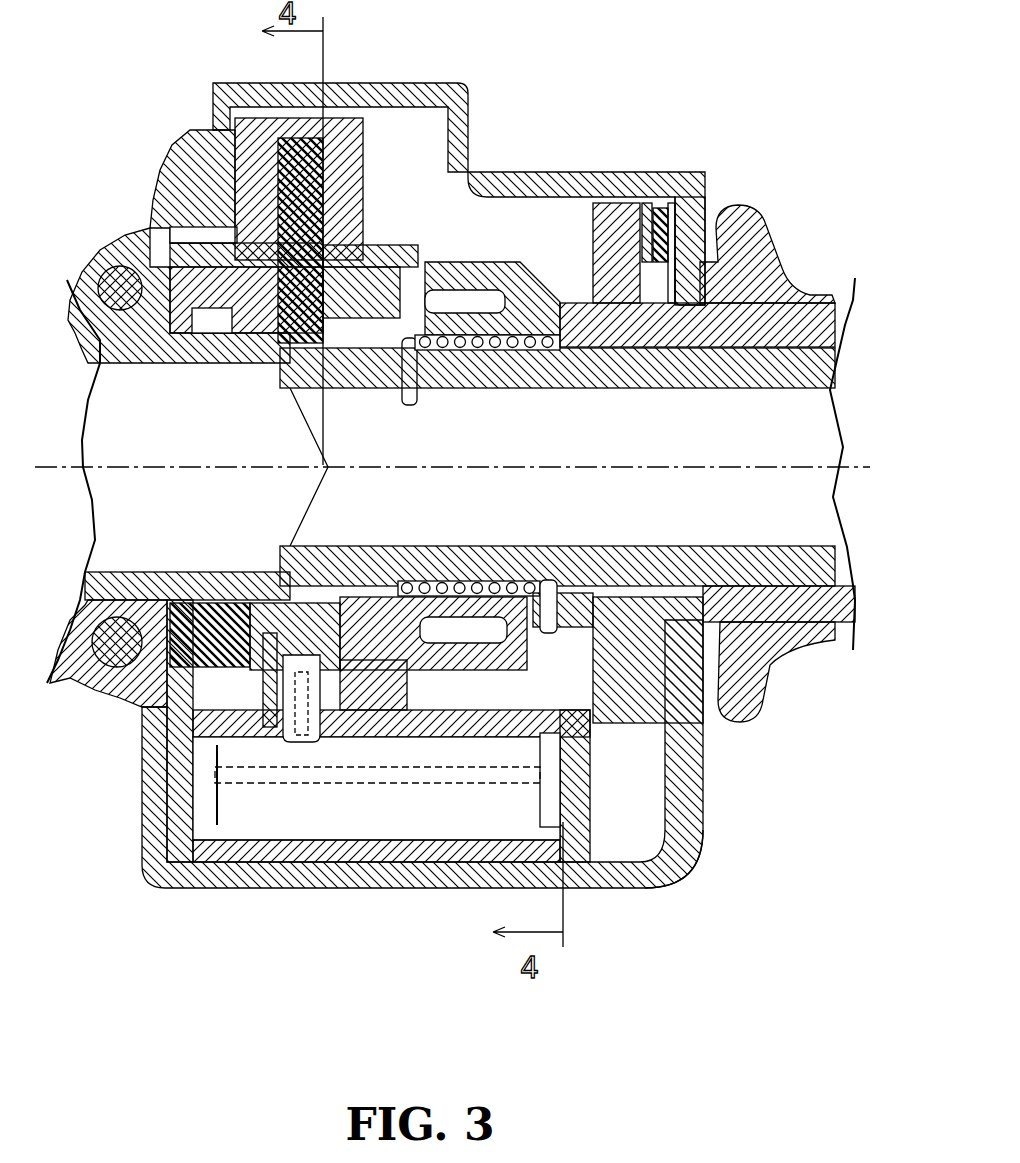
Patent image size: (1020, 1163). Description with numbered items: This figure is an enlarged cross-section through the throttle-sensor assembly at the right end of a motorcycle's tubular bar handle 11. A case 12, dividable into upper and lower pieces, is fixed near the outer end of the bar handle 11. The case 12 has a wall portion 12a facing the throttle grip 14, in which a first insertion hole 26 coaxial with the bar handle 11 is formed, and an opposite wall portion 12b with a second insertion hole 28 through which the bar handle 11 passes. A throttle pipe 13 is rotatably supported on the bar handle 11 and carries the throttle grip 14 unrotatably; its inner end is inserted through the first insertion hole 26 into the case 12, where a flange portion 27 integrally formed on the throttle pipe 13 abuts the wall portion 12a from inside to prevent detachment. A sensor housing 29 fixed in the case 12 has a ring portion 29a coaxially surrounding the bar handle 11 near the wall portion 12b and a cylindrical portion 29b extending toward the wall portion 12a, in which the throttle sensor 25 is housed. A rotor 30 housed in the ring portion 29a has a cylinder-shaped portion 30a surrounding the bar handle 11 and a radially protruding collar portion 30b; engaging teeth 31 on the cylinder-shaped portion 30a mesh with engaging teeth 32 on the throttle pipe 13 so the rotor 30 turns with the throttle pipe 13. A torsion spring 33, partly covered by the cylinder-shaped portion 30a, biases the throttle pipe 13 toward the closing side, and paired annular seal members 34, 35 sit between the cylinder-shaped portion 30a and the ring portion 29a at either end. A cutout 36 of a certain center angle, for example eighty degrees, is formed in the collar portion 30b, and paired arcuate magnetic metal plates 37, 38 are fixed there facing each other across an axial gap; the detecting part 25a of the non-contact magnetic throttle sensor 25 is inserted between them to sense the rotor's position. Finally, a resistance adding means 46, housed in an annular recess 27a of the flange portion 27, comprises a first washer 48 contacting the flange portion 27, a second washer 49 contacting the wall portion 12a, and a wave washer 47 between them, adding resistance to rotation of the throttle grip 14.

The bar handle 11 is at (772, 376).
The case 12 is at (488, 190).
The wall portion 12a is at (706, 210).
The wall portion 12b is at (147, 770).
The throttle pipe 13 is at (845, 337).
The throttle grip 14 is at (763, 260).
The throttle sensor 25 is at (313, 860).
The detecting part 25a is at (407, 688).
The first insertion hole 26 is at (678, 600).
The flange portion 27 is at (615, 205).
The annular recess 27a is at (688, 700).
The second insertion hole 28 is at (120, 585).
The sensor housing 29 is at (162, 190).
The ring portion 29a is at (150, 229).
The cylindrical portion 29b is at (392, 862).
The rotor 30 is at (163, 657).
The cylinder-shaped portion 30a is at (250, 572).
The collar portion 30b is at (250, 167).
The engaging teeth 31 is at (490, 265).
The engaging teeth 32 is at (462, 346).
The torsion spring 33 is at (533, 350).
The annular seal member 34 is at (372, 318).
The annular seal member 35 is at (205, 335).
The cutout 36 is at (288, 560).
The arcuate magnetic metal plate 37 is at (310, 677).
The arcuate magnetic metal plate 38 is at (217, 823).
The resistance adding means 46 is at (668, 755).
The wave washer 47 is at (670, 225).
The first washer 48 is at (652, 205).
The second washer 49 is at (697, 200).